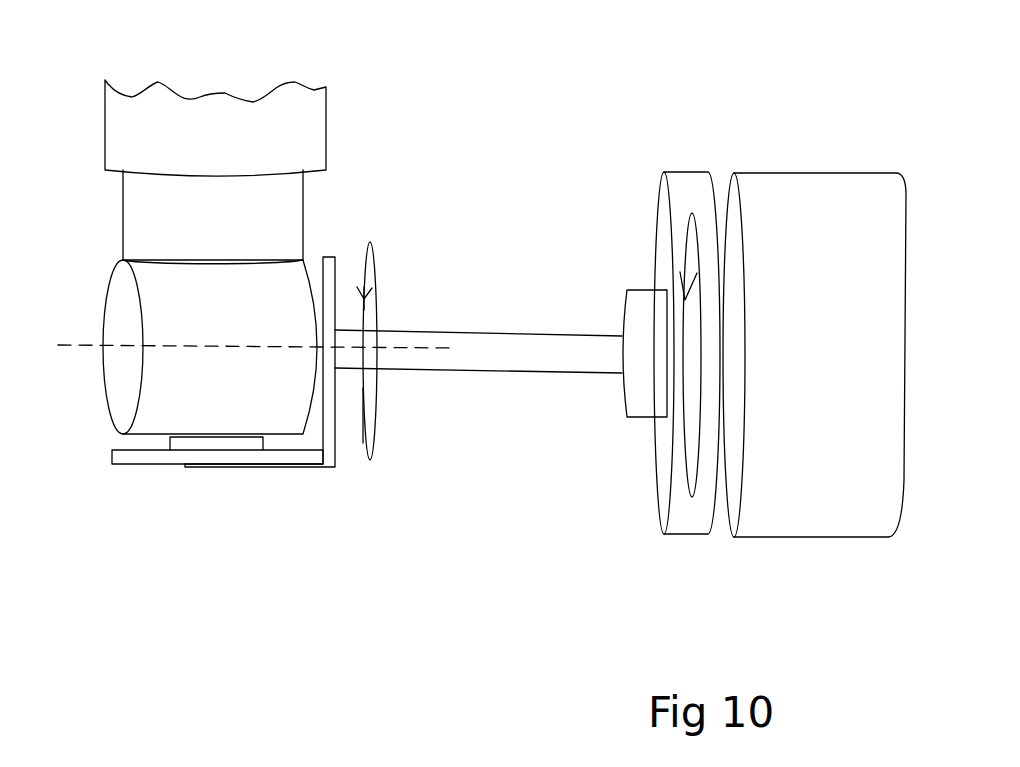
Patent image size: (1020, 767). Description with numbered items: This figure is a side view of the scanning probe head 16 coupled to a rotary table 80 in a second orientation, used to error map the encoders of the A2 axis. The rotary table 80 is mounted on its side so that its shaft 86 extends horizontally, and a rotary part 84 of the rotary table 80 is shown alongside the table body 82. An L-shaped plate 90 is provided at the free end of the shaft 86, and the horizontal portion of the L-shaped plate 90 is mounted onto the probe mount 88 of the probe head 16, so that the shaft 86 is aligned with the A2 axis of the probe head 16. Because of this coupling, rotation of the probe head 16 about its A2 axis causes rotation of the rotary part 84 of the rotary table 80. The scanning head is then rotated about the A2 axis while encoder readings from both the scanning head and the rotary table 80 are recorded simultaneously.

The probe head 16 is at (88, 272).
The A2 axis A2 is at (242, 364).
The rotary table 80 is at (808, 145).
The flywheel disc 82 is at (820, 537).
The rotary part 84 is at (710, 535).
The shaft 86 is at (502, 334).
The probe mount 88 is at (187, 464).
The L-shaped plate 90 is at (280, 467).